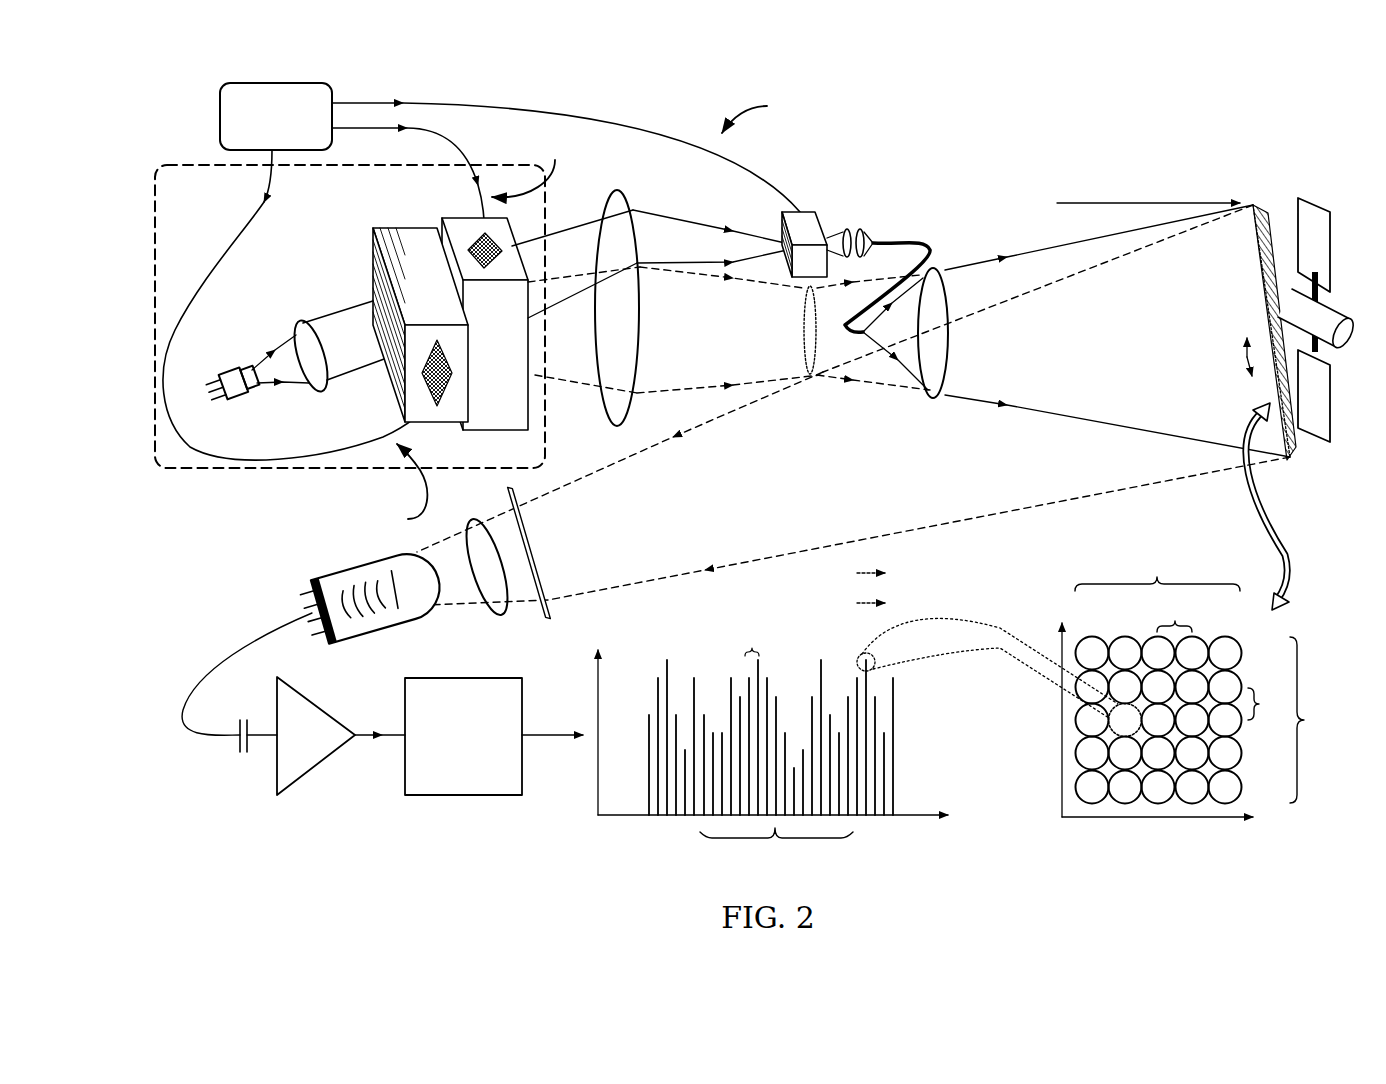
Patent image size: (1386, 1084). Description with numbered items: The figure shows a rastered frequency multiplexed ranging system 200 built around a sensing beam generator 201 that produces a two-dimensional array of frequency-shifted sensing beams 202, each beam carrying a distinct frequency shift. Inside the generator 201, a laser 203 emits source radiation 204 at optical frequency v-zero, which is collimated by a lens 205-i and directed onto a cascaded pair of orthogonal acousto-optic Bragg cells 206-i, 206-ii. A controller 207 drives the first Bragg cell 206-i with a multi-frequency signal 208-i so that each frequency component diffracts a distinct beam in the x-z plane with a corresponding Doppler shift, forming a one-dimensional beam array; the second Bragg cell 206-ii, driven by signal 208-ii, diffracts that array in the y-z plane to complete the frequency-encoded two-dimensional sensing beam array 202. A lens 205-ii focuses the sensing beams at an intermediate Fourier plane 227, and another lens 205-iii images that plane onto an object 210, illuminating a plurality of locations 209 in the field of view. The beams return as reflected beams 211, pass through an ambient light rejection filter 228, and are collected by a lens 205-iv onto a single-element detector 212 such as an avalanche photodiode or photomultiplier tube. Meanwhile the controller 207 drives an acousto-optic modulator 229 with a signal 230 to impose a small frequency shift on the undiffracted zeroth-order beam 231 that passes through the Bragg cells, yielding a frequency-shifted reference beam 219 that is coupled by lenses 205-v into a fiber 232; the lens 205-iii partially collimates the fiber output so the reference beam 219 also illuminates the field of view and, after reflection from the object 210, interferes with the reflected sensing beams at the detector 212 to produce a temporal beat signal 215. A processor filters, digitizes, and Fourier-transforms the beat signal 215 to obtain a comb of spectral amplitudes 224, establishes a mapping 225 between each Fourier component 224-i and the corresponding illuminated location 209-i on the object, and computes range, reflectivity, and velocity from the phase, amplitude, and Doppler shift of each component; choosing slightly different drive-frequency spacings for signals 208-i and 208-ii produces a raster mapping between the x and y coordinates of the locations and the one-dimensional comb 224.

The rastered frequency multiplexed ranging system 200 is at (1085, 142).
The sensing beam generator 201 is at (192, 163).
The frequency-shifted sensing beams 202 is at (690, 395).
The laser 203 is at (238, 400).
The source radiation 204 is at (363, 303).
The lens 205-i is at (300, 323).
The lens 205-ii is at (617, 190).
The lens 205-iii is at (933, 398).
The lens 205-iv is at (502, 618).
The lenses 205-v is at (862, 230).
The first Bragg cell 206-i is at (387, 225).
The second Bragg cell 206-ii is at (468, 217).
The controller 207 is at (276, 116).
The drive signal 208-i is at (235, 237).
The drive signal 208-ii is at (423, 138).
The illuminated locations 209 is at (1236, 296).
The illuminated location 209-i is at (1110, 733).
The object 210 is at (1335, 315).
The reflected beams 211 is at (1097, 495).
The single-element detector 212 is at (340, 640).
The temporal beat signal 215 is at (242, 643).
The frequency-shifted reference beam 219 is at (908, 373).
The RF spectrum amplitudes (Fourier comb) 224 is at (922, 698).
The Fourier component 224-i is at (870, 675).
The mapping 225 is at (1012, 633).
The intermediate Fourier plane 227 is at (815, 372).
The ambient light rejection filter 228 is at (548, 590).
The acousto-optic modulator 229 is at (818, 233).
The signal 230 is at (600, 110).
The undiffracted zeroth order beam 231 is at (682, 213).
The fiber 232 is at (923, 248).